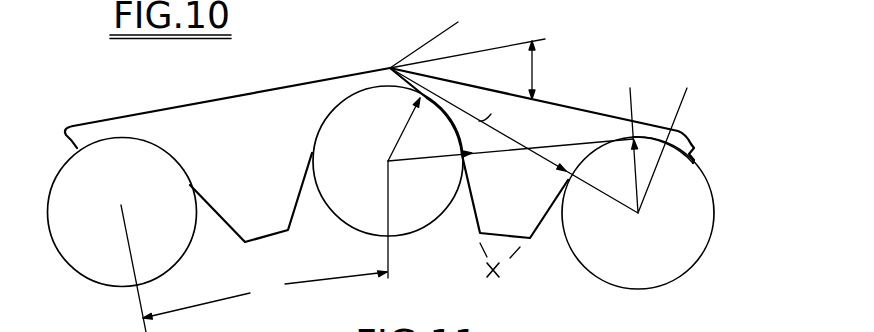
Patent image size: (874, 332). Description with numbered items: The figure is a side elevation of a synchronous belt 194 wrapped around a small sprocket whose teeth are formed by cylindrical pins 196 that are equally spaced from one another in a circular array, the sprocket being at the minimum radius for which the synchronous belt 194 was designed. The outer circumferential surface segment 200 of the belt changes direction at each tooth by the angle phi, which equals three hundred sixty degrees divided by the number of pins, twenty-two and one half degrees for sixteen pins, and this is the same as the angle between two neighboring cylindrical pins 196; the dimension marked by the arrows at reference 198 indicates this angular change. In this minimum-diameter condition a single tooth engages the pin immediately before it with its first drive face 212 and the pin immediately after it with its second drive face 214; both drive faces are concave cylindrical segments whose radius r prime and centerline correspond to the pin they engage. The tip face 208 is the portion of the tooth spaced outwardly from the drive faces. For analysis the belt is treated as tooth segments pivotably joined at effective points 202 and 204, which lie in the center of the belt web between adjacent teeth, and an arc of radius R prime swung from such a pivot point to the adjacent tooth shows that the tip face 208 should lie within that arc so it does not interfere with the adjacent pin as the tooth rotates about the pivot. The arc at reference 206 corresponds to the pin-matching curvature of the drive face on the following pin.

The synchronous belt 194 is at (277, 86).
The cylindrical pins 196 is at (338, 229).
The angle phi 198 is at (534, 71).
The outer circumferential surface segment 200 is at (358, 70).
The effective pivot point 202 is at (437, 34).
The effective pivot point 204 is at (633, 140).
The roller contact arc 206 is at (694, 163).
The tip face 208 is at (530, 239).
The first drive face 212 is at (593, 150).
The second drive face 214 is at (448, 122).